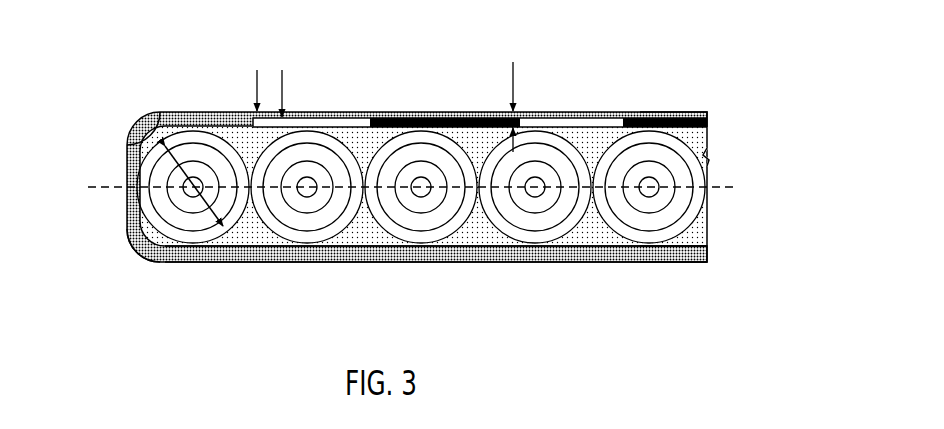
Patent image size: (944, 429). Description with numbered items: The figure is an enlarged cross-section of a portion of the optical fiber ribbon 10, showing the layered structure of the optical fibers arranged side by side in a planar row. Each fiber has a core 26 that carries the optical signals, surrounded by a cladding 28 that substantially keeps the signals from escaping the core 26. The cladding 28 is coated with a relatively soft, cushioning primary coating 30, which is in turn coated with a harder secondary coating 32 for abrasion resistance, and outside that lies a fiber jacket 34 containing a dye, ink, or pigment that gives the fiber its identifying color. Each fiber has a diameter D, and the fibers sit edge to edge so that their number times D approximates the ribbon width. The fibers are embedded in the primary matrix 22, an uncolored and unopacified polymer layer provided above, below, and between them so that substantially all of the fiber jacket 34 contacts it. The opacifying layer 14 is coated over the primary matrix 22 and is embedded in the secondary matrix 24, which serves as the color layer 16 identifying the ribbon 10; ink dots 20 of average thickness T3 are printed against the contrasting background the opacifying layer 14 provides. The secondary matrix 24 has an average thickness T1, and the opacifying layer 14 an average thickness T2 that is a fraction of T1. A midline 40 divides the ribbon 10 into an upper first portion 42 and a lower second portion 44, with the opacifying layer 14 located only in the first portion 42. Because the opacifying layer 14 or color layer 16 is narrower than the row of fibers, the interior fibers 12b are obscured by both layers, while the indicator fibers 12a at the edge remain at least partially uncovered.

The optical fiber ribbon 10 is at (97, 159).
The indicator fibers 12a is at (159, 232).
The interior fibers 12b is at (340, 232).
The opacifying layer 14 is at (357, 112).
The color layer 16 is at (677, 112).
The ink dots 20 is at (547, 111).
The primary matrix 22 is at (365, 233).
The secondary matrix 24 is at (527, 263).
The core 26 is at (651, 187).
The cladding 28 is at (666, 195).
The primary coating 30 is at (677, 210).
The secondary coating 32 is at (690, 228).
The fiber jacket 34 is at (670, 262).
The midline 40 is at (210, 180).
The first portion 42 is at (134, 110).
The second portion 44 is at (120, 233).
The diameter D is at (177, 170).
The average thickness of the secondary matrix T1 is at (257, 76).
The average thickness of the opacifying layer T2 is at (282, 79).
The average thickness of the ink dots T3 is at (513, 92).